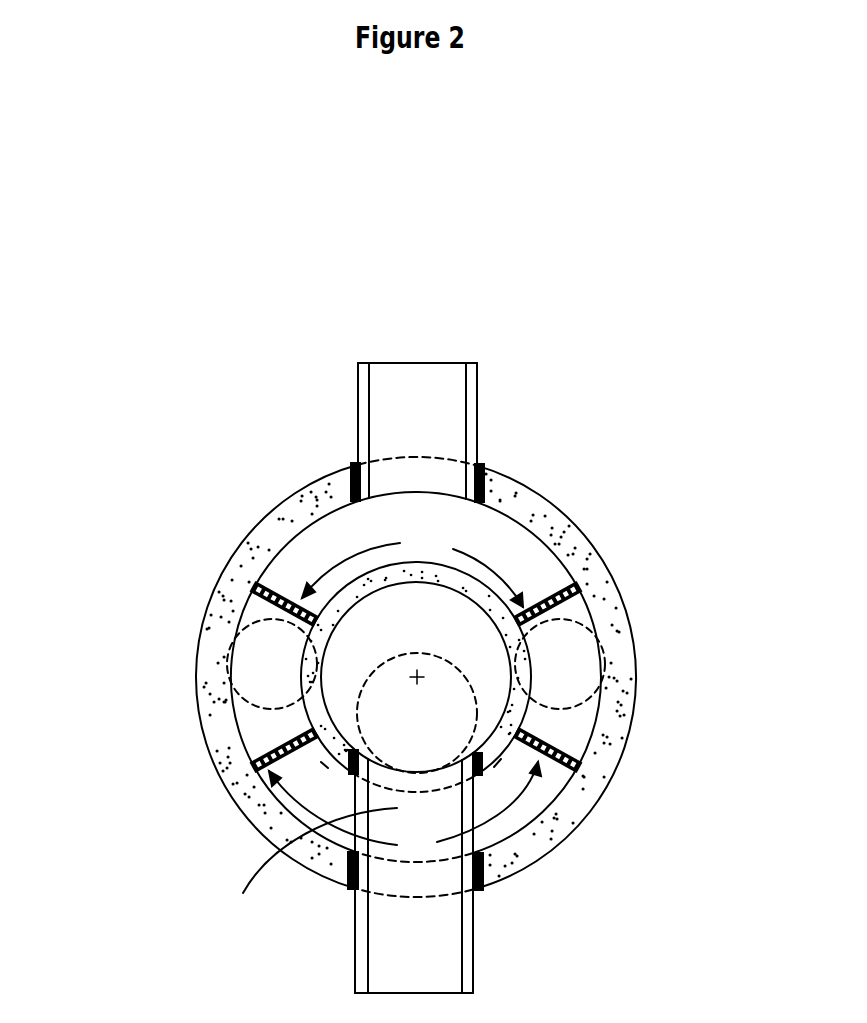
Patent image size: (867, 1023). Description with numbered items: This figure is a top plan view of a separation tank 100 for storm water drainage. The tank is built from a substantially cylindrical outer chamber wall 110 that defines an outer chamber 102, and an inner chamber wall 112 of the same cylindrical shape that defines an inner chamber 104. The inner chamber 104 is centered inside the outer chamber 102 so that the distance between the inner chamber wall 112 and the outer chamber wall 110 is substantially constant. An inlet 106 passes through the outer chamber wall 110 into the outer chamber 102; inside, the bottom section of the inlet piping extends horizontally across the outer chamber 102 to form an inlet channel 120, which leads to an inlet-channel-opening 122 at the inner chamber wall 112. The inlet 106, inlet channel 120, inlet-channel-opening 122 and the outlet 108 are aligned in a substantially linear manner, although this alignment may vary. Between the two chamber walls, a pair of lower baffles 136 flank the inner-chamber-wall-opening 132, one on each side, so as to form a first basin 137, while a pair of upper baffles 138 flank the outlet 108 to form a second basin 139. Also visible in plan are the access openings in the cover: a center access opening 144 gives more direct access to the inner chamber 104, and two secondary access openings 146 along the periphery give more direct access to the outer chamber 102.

The separation tank 100 is at (358, 576).
The outer chamber 102 is at (416, 527).
The inner chamber 104 is at (416, 677).
The inlet 106 is at (415, 871).
The outlet 108 is at (417, 432).
The outer chamber wall 110 is at (543, 523).
The inner chamber wall 112 is at (344, 612).
The inlet channel 120 is at (320, 865).
The inlet-channel-opening 122 is at (427, 777).
The inner-chamber-wall-opening 132 is at (495, 770).
The lower baffles 136 is at (255, 757).
The first basin 137 is at (405, 810).
The upper baffles 138 is at (275, 587).
The second basin 139 is at (412, 565).
The center access opening 144 is at (368, 675).
The secondary access openings 146 is at (267, 615).